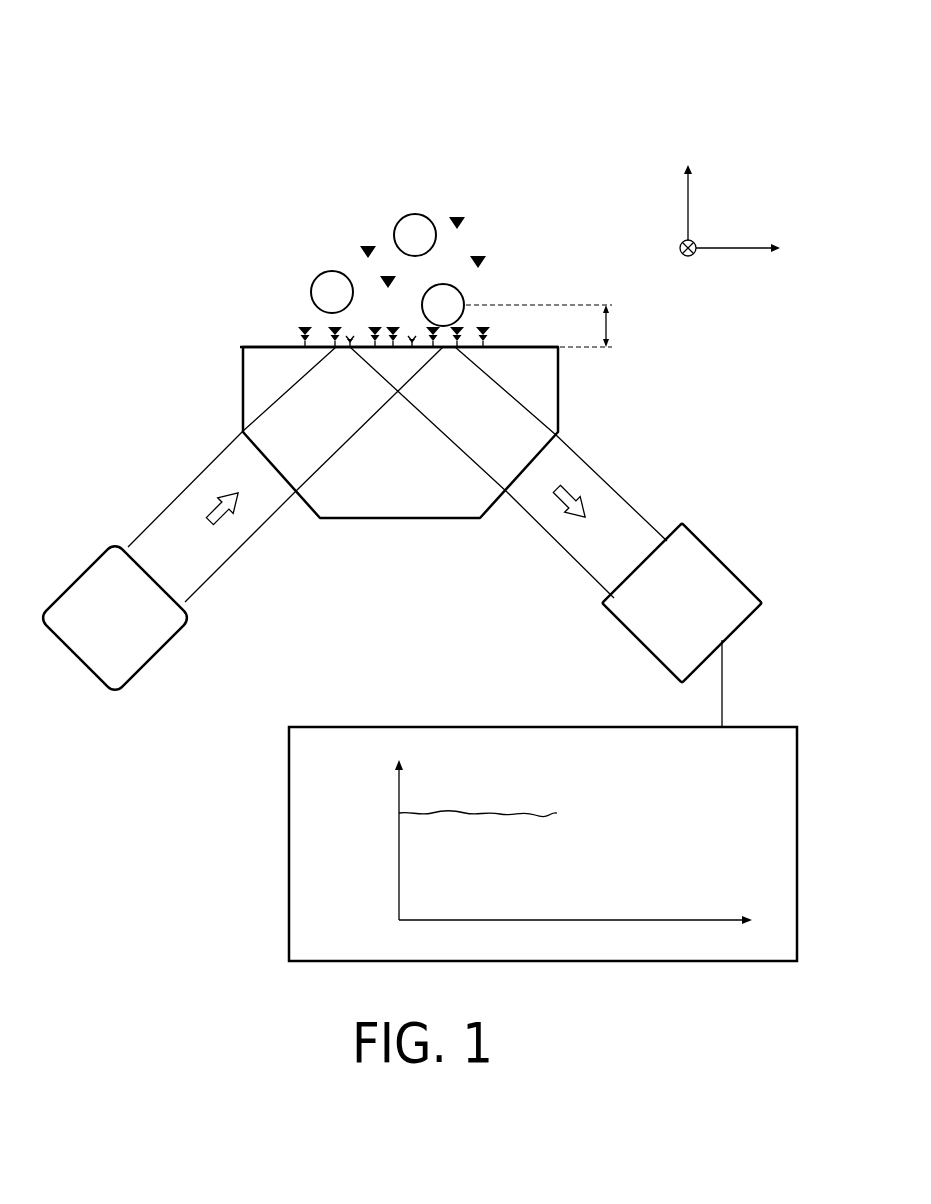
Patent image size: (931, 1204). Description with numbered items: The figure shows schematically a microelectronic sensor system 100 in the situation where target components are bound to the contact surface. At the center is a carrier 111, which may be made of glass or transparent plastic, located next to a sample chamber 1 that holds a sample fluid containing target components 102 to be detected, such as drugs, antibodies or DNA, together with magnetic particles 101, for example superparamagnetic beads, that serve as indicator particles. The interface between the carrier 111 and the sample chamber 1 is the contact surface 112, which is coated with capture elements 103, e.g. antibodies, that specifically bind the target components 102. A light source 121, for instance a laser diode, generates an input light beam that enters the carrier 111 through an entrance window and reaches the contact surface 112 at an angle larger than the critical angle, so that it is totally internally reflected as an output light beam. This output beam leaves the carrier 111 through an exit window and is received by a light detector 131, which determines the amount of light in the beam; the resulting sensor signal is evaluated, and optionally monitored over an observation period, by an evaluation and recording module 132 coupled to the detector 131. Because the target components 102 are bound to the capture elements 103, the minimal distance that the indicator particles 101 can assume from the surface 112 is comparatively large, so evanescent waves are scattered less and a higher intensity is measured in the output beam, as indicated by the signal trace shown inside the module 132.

The microelectronic sensor system 100 is at (283, 98).
The sample chamber 1 is at (520, 222).
The magnetic particles 101 is at (416, 213).
The target components 102 is at (365, 245).
The capture elements 103 is at (302, 345).
The carrier 111 is at (549, 385).
The contact surface 112 is at (258, 342).
The light source 121 is at (140, 634).
The light detector 131 is at (704, 617).
The evaluation and recording module 132 is at (289, 815).